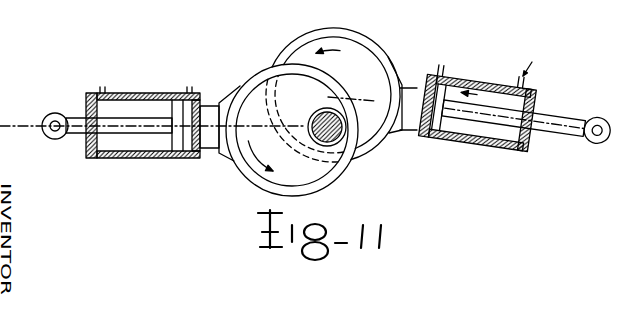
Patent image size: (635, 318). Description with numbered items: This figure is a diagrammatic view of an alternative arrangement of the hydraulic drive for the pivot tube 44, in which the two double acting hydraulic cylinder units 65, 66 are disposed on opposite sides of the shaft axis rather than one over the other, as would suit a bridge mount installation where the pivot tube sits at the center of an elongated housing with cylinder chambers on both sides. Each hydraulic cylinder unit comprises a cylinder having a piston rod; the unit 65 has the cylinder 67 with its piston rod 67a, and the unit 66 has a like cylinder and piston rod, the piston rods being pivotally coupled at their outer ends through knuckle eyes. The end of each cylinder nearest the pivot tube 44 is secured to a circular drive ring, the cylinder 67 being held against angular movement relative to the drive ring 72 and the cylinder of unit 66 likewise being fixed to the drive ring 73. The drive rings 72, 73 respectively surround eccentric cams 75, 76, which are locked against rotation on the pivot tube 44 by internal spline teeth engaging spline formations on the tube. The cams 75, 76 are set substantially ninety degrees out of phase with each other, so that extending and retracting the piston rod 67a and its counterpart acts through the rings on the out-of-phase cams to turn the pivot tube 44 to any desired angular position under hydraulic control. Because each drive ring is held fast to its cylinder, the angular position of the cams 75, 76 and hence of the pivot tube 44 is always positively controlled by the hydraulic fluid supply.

The pivot tube 44 is at (340, 140).
The hydraulic cylinder unit 65 is at (129, 127).
The hydraulic cylinder unit 66 is at (518, 113).
The cylinder 67 is at (135, 158).
The piston rod 67a is at (78, 117).
The drive ring 72 is at (248, 78).
The drive ring 73 is at (362, 44).
The eccentric cam 75 is at (283, 172).
The eccentric cam 76 is at (363, 72).